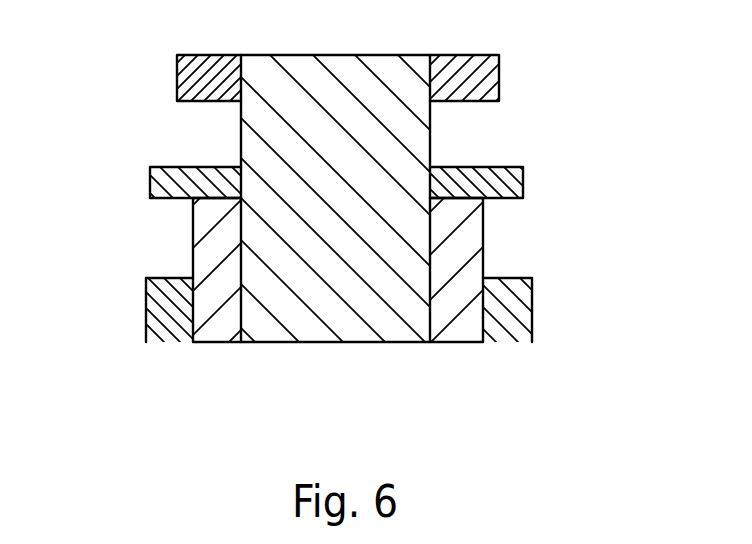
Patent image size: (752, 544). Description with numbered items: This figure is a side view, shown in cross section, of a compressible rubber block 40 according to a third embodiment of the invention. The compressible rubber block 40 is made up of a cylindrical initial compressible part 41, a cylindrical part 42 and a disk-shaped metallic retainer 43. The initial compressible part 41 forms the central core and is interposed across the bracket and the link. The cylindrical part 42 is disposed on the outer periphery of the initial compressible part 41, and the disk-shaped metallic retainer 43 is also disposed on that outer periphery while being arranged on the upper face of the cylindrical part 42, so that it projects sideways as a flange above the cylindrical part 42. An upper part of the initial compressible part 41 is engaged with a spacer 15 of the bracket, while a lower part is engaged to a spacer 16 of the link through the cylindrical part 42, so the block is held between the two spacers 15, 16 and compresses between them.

The spacer 15 is at (499, 73).
The spacer 16 is at (532, 312).
The compressible rubber block 40 is at (543, 185).
The cylindrical initial compressible part 41 is at (241, 128).
The cylindrical part 42 is at (193, 248).
The disk-shaped metallic retainer 43 is at (150, 183).